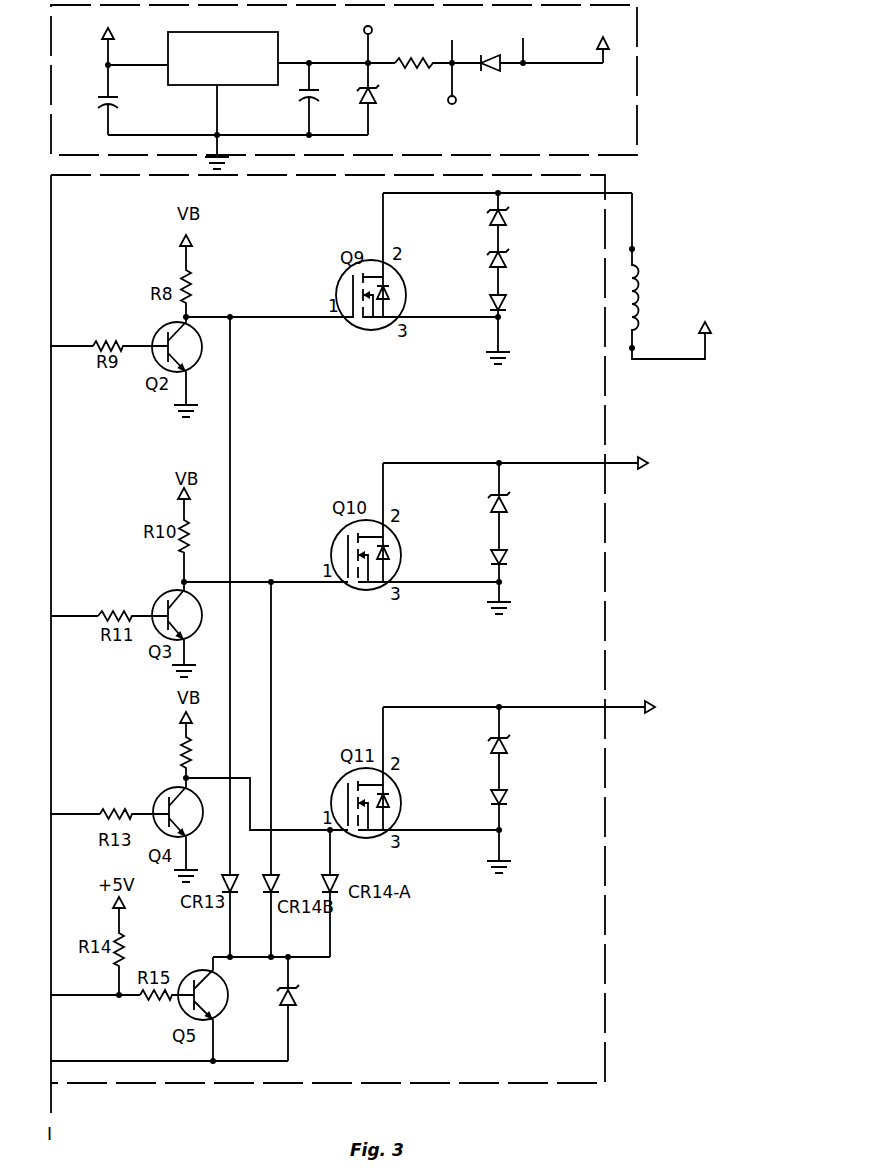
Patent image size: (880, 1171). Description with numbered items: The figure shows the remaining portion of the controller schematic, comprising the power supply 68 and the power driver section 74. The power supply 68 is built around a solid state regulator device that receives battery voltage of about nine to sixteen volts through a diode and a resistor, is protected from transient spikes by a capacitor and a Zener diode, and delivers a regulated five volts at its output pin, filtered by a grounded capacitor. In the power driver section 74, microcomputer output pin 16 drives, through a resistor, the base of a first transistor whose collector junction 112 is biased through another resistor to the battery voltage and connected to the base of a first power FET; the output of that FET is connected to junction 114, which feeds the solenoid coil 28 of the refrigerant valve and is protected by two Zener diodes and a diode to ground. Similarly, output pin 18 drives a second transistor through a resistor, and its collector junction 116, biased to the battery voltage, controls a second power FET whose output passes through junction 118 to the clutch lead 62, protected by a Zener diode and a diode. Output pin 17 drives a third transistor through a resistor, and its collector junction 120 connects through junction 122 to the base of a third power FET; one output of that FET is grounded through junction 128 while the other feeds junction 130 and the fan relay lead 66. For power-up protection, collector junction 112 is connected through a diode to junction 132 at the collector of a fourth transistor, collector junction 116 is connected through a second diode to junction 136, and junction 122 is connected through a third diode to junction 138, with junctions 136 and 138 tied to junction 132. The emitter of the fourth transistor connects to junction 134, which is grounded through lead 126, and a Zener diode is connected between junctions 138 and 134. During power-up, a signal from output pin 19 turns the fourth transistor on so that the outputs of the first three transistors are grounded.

The microcomputer output pin 16 is at (72, 335).
The microcomputer output pin 17 is at (75, 803).
The microcomputer output pin 18 is at (74, 604).
The microcomputer output pin 19 is at (95, 983).
The solenoid coil 28 is at (653, 255).
The clutch lead 62 is at (625, 463).
The fan relay lead 66 is at (615, 707).
The power supply 68 is at (640, 98).
The power driver section 74 is at (608, 995).
The collector junction 112 is at (188, 315).
The junction 114 is at (490, 199).
The collector junction 116 is at (182, 581).
The junction 118 is at (499, 462).
The collector junction 120 is at (182, 778).
The junction 122 is at (329, 834).
The lead 126 is at (84, 1060).
The junction 128 is at (500, 830).
The junction 130 is at (500, 706).
The junction 132 is at (228, 955).
The junction 134 is at (215, 1060).
The junction 136 is at (271, 960).
The junction 138 is at (291, 960).